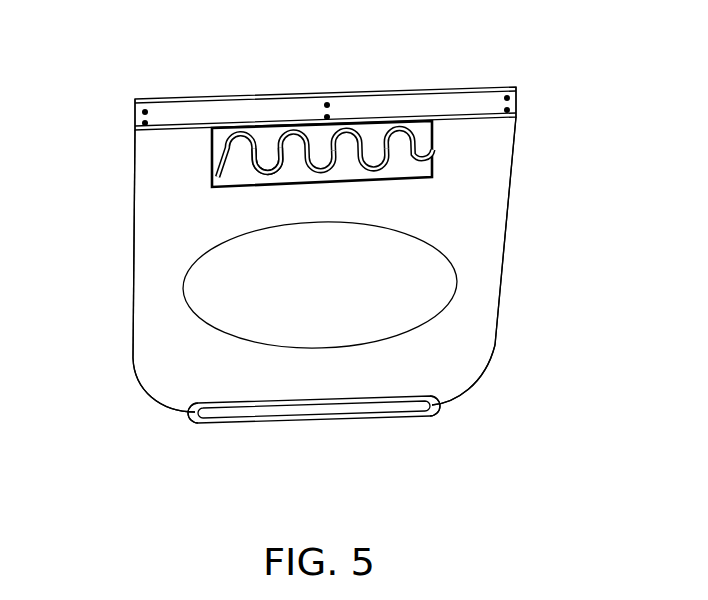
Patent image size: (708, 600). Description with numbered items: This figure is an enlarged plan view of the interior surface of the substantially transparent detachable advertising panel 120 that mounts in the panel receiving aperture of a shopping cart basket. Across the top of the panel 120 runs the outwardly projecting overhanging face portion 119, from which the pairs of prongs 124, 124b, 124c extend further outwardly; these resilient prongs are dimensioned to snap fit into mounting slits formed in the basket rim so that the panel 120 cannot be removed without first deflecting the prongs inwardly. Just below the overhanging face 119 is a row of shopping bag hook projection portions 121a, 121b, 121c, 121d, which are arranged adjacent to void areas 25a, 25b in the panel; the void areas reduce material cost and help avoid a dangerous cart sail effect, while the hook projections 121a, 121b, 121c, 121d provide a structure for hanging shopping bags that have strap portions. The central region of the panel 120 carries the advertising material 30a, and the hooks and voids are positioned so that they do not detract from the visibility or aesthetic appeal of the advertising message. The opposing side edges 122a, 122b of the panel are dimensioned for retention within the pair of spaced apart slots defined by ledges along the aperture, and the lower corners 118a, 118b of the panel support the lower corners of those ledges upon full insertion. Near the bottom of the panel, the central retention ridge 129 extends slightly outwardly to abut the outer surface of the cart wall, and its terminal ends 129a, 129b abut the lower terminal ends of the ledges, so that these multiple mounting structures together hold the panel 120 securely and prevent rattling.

The substantially transparent detachable advertising panel 120 is at (517, 297).
The overhanging face portion 119 is at (174, 118).
The shopping bag hook projection portion 121a is at (230, 138).
The shopping bag hook projection portion 121b is at (302, 130).
The shopping bag hook projection portion 121c is at (365, 147).
The shopping bag hook projection portion 121d is at (400, 140).
The prongs 124 is at (135, 117).
The prongs 124b is at (327, 103).
The prongs 124c is at (518, 90).
The panel edge 122a is at (135, 163).
The panel edge 122b is at (512, 172).
The void areas 25a is at (213, 162).
The channel trough 25b is at (265, 163).
The advertising material 30a is at (427, 265).
The panel lower corner 118a is at (140, 393).
The panel lower corner 118b is at (492, 377).
The central retention ridge 129 is at (397, 408).
The terminal end of central retention ridge 129a is at (197, 418).
The terminal end of central retention ridge 129b is at (432, 408).